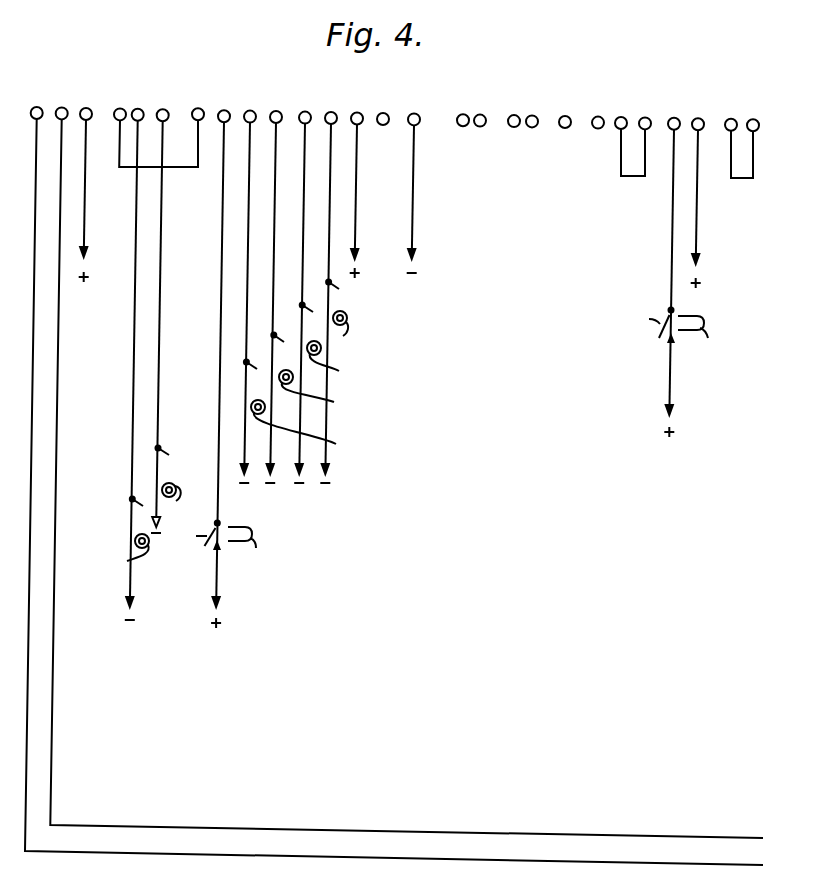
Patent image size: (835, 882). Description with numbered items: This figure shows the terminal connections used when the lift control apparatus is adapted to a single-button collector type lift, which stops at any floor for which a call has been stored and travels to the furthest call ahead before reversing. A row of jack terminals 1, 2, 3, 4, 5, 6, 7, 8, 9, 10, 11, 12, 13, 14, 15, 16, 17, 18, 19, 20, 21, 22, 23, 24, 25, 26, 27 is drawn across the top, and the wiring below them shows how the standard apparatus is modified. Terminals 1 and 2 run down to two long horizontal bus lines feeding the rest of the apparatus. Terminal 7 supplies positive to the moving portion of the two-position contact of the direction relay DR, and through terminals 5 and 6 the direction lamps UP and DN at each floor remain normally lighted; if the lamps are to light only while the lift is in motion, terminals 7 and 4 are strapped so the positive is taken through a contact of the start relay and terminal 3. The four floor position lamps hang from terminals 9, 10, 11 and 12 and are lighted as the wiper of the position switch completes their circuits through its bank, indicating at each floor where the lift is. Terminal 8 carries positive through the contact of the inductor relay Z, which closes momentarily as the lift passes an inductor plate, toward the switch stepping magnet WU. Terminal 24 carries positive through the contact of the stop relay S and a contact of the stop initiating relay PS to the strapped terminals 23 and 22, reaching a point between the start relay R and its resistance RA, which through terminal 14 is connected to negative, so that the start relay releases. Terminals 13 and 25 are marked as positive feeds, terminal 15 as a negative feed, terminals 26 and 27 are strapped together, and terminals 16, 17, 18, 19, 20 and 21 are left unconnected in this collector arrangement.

The jack terminal 1 is at (394, 470).
The jack terminal 2 is at (62, 107).
The terminal 3 is at (86, 181).
The terminal 4 is at (120, 108).
The terminal 5 is at (124, 350).
The terminal 6 is at (163, 109).
The terminal 7 is at (198, 124).
The jack terminal 8 is at (224, 110).
The jack terminal 9 is at (307, 282).
The jack terminal 10 is at (276, 111).
The jack terminal 11 is at (336, 282).
The jack terminal 12 is at (331, 112).
The jack terminal 13 is at (356, 179).
The jack terminal 14 is at (383, 113).
The jack terminal 15 is at (412, 179).
The jack terminal 16 is at (461, 115).
The jack terminal 17 is at (479, 108).
The jack terminal 18 is at (516, 115).
The jack terminal 19 is at (531, 109).
The jack terminal 20 is at (565, 116).
The jack terminal 21 is at (597, 111).
The terminal 22 is at (621, 117).
The terminal 23 is at (644, 112).
The jack terminal 24 is at (674, 117).
The jack terminal 25 is at (699, 191).
The jack terminal 26 is at (730, 118).
The jack terminal 27 is at (752, 113).